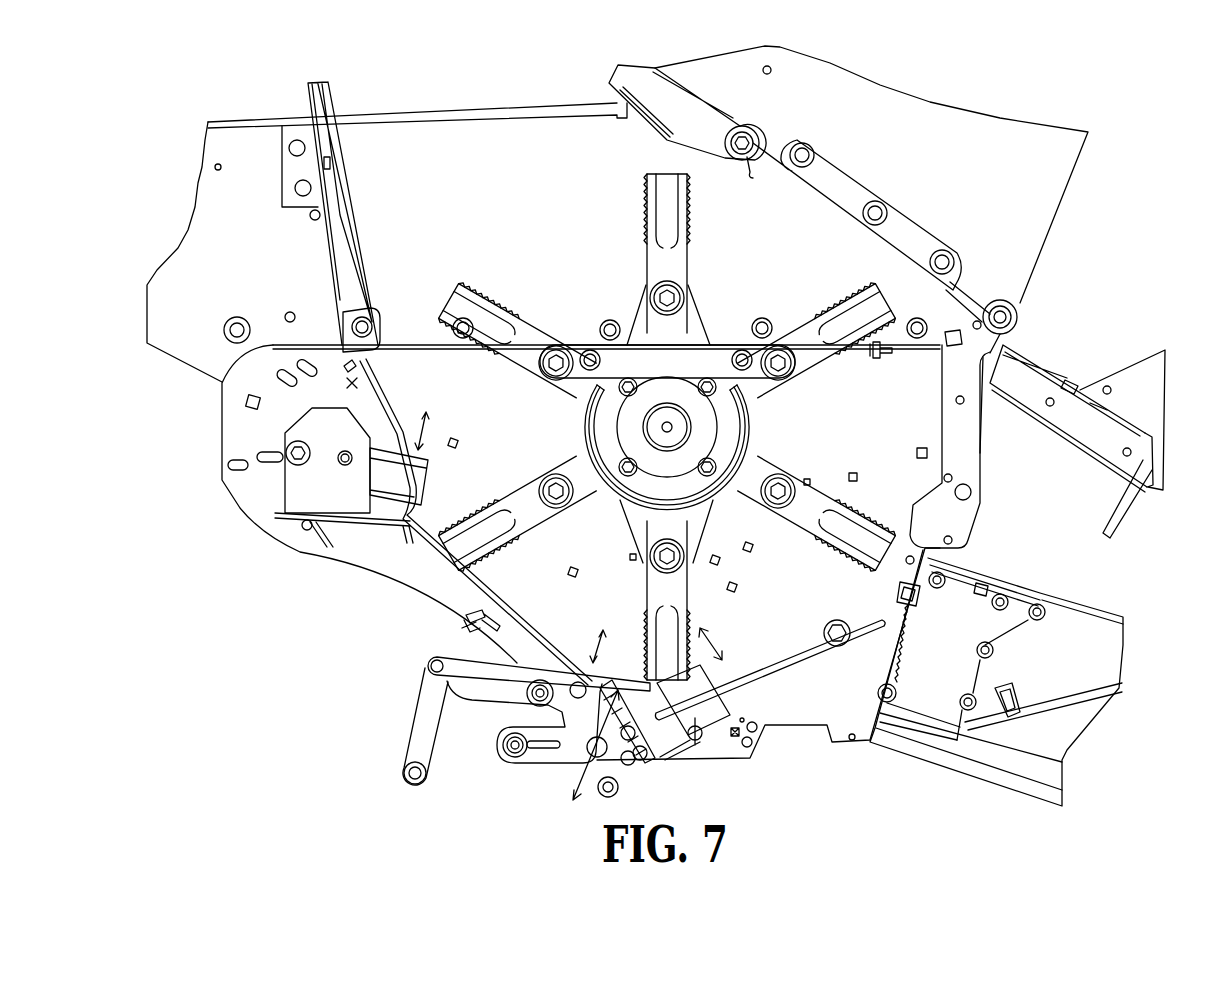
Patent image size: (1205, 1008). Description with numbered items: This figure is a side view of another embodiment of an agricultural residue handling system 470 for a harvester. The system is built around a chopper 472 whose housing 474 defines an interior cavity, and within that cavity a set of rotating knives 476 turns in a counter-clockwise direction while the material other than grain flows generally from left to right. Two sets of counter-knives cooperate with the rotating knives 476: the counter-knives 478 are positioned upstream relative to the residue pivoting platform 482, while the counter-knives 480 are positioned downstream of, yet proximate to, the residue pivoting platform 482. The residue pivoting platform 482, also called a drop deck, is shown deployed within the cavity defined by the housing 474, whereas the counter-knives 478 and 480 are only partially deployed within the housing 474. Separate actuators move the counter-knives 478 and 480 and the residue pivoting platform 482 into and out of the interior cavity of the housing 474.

The residue handling system 470 is at (1008, 280).
The chopper 472 is at (834, 271).
The housing 474 is at (447, 586).
The rotating knives 476 is at (848, 552).
The counter-knives 478 is at (429, 478).
The counter-knives 480 is at (707, 678).
The residue pivoting platform 482 is at (508, 663).